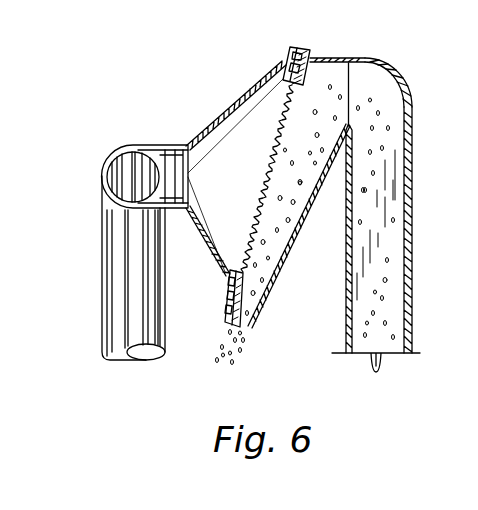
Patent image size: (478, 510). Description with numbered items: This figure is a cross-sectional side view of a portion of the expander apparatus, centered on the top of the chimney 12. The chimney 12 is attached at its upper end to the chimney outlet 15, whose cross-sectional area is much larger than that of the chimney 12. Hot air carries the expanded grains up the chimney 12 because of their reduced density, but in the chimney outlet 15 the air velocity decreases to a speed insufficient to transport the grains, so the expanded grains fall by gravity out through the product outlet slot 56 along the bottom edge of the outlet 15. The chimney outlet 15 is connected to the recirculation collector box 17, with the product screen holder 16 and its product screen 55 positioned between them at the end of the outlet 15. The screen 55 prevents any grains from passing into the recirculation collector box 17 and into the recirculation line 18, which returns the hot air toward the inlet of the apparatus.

The chimney 12 is at (413, 270).
The chimney outlet 15 is at (334, 57).
The product screen holder 16 is at (297, 47).
The recirculation collector box 17 is at (212, 124).
The recirculation line 18 is at (102, 290).
The product screen 55 is at (258, 200).
The product outlet slot 56 is at (248, 328).